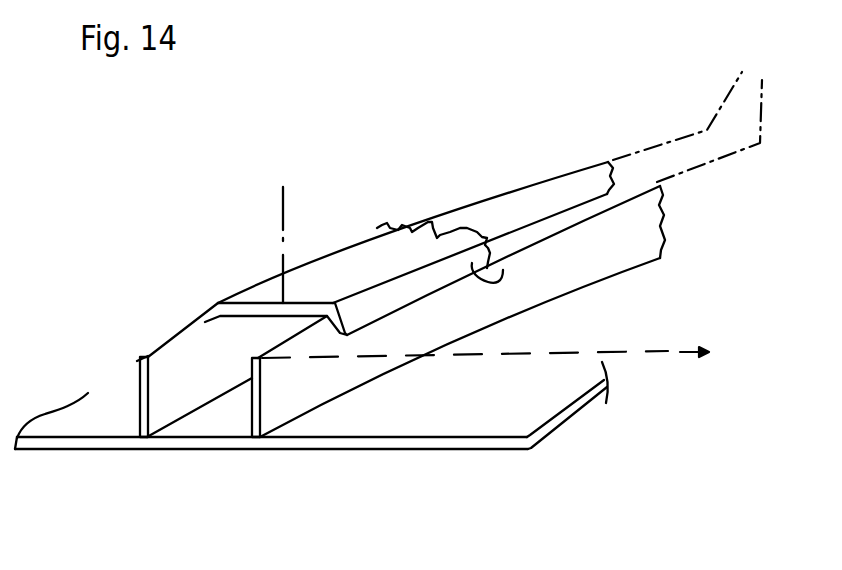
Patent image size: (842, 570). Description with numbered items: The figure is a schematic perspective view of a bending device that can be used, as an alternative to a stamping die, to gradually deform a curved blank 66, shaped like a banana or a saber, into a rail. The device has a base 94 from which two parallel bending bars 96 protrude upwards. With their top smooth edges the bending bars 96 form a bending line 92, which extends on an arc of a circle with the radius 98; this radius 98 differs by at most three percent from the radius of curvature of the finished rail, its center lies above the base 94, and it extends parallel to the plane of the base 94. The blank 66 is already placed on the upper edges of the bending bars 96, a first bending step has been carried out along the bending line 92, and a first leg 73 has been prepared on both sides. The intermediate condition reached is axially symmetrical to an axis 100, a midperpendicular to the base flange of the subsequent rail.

The blank 66 is at (363, 257).
The first leg 73 is at (503, 270).
The bending line 92 is at (693, 106).
The base 94 is at (513, 412).
The bending bars 96 is at (157, 395).
The radius 98 is at (658, 348).
The axis 100 is at (275, 208).